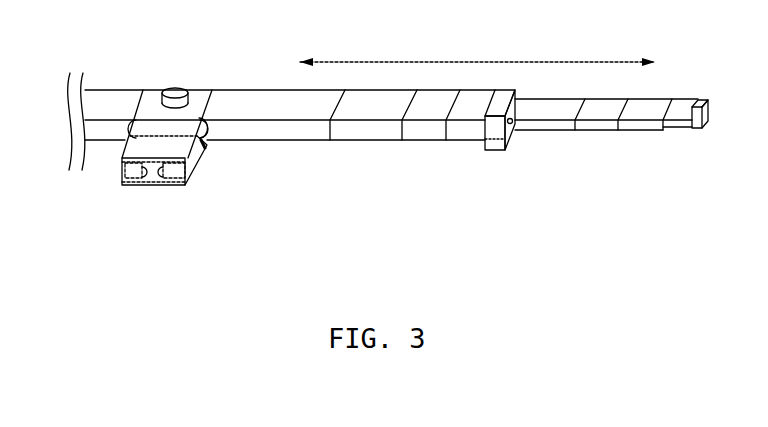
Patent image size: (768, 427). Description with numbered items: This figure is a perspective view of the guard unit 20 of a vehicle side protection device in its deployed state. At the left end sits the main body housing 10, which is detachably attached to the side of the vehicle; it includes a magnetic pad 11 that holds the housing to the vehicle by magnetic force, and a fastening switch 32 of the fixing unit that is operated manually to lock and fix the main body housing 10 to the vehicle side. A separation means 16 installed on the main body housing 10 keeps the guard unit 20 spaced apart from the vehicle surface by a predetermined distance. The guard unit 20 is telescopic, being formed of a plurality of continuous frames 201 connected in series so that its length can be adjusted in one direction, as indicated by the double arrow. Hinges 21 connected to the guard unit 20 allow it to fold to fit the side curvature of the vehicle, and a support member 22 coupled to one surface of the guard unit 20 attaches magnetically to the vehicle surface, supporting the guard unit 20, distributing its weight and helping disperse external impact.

The main body housing 10 is at (144, 135).
The magnetic pad 11 is at (122, 183).
The separation means 16 is at (176, 90).
The guard unit 20 is at (268, 74).
The continuous frames 201 is at (303, 133).
The hinges 21 is at (205, 132).
The support member 22 is at (493, 151).
The fastening switch 32 is at (172, 175).